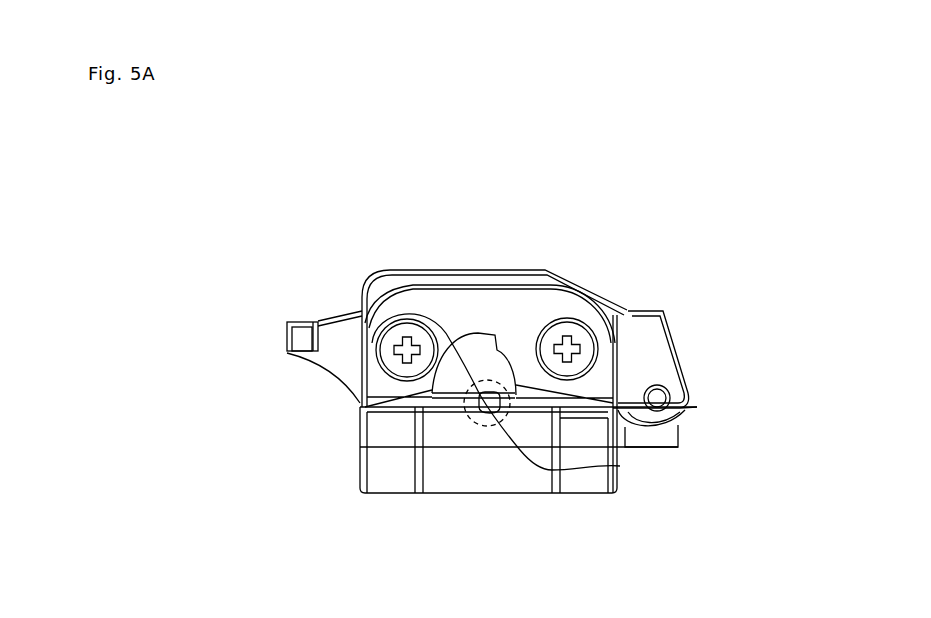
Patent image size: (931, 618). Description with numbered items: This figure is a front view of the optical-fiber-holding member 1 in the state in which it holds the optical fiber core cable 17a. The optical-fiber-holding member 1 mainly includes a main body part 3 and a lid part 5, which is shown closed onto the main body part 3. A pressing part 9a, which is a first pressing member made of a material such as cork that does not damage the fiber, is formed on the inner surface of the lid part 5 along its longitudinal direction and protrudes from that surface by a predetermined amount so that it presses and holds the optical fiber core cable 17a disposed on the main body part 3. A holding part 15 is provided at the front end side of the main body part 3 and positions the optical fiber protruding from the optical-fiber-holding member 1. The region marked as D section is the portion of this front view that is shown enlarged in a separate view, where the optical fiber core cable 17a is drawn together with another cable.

The optical-fiber-holding member 1 is at (614, 246).
The lid part 5 is at (484, 281).
The D section D is at (362, 313).
The pressing part 9a is at (360, 408).
The optical fiber core cable 17a is at (688, 410).
The holding part 15 is at (620, 466).
The main body part 3 is at (398, 473).